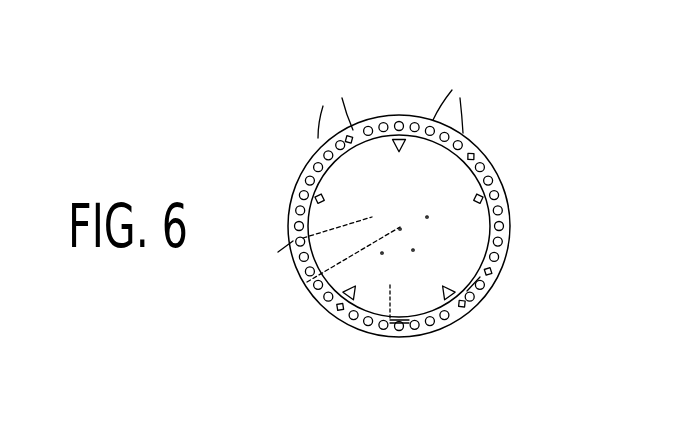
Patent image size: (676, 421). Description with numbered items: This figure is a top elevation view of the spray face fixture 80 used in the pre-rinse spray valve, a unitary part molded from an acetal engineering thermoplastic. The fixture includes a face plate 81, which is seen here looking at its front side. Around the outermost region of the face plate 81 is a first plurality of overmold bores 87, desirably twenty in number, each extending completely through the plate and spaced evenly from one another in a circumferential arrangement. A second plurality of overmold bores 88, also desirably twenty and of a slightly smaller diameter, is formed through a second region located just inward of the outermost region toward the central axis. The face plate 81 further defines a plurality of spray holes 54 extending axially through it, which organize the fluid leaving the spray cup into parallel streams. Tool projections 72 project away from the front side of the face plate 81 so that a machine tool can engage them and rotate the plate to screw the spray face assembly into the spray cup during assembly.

The spray face fixture 80 is at (515, 132).
The second plurality of overmold bores 88 is at (381, 118).
The first plurality of overmold bores 87 is at (403, 118).
The tool projections 72 is at (307, 195).
The spray holes 54 is at (398, 197).
The face plate 81 is at (392, 325).